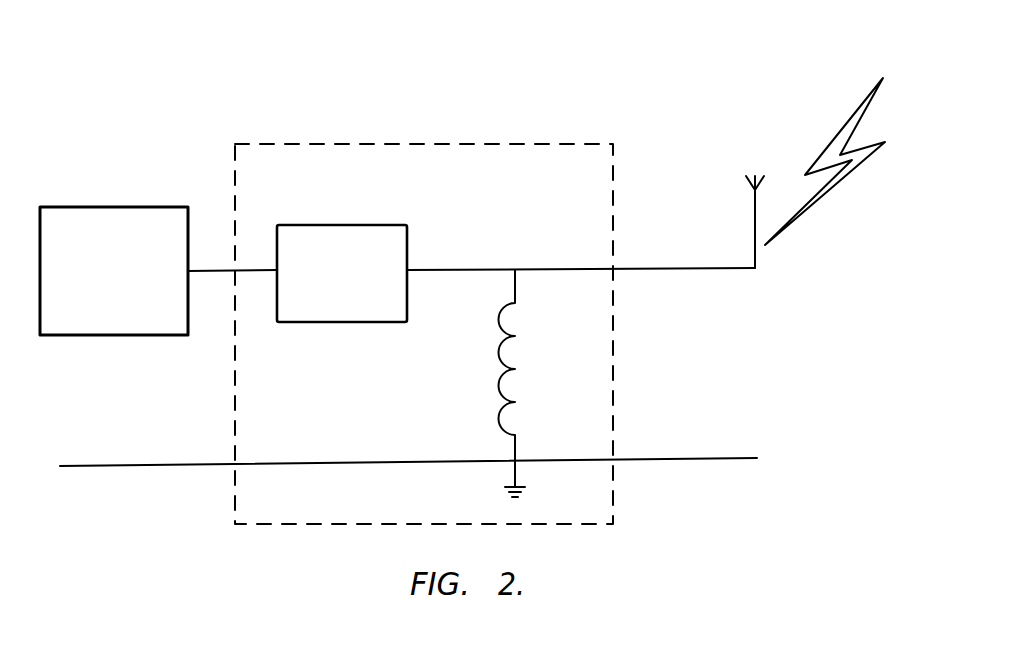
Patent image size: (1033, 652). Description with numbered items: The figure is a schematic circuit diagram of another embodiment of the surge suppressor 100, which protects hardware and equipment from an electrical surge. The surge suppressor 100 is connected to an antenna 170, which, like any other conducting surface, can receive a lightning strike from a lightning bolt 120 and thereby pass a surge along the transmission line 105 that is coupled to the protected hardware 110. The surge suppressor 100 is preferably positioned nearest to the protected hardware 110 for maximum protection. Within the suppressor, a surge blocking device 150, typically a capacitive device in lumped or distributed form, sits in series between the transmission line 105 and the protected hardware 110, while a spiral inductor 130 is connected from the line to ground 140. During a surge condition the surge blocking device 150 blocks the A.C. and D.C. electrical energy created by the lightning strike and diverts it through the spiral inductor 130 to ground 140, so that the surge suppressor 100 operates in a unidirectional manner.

The surge suppressor 100 is at (478, 121).
The transmission line 105 is at (718, 263).
The protected hardware 110 is at (168, 206).
The lightning bolt 120 is at (835, 138).
The spiral inductor 130 is at (498, 350).
The ground 140 is at (517, 467).
The surge blocking device 150 is at (403, 223).
The antenna 170 is at (753, 211).